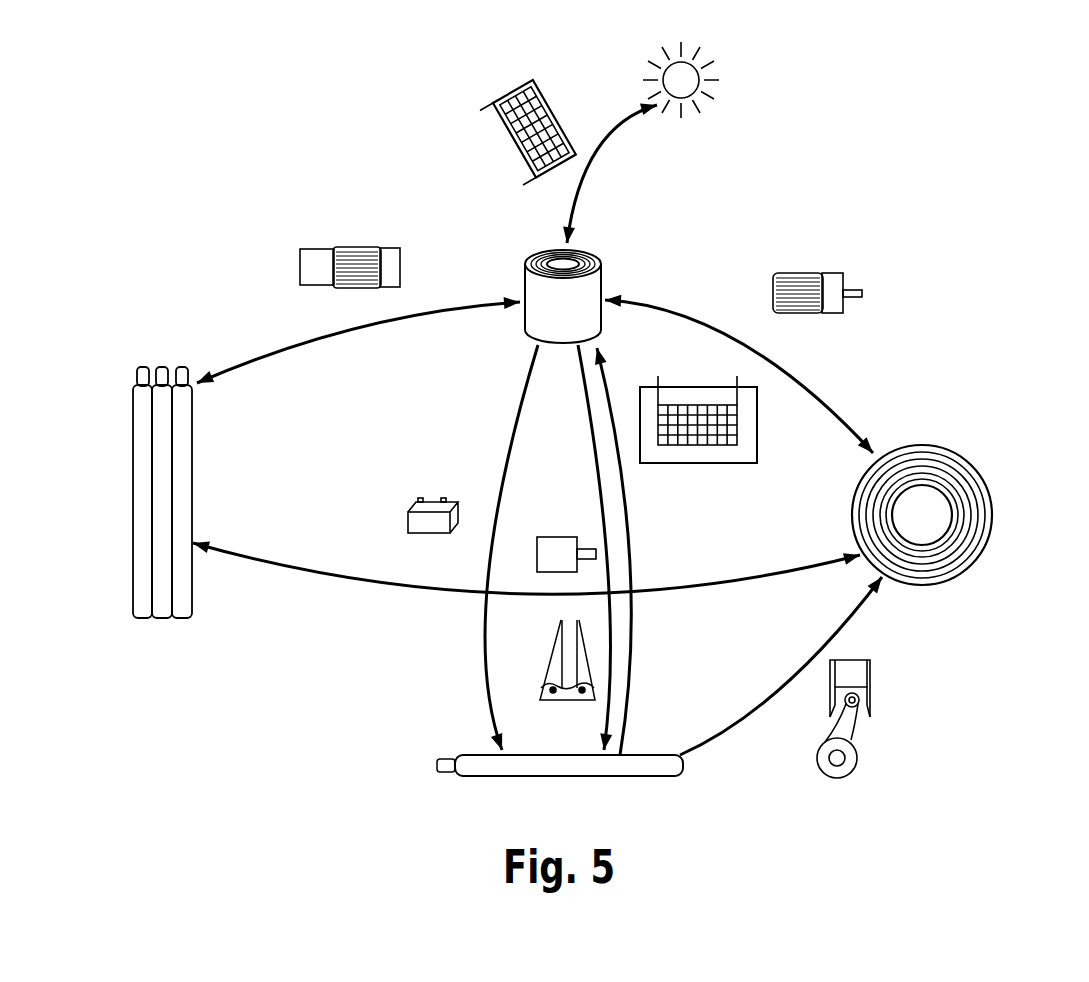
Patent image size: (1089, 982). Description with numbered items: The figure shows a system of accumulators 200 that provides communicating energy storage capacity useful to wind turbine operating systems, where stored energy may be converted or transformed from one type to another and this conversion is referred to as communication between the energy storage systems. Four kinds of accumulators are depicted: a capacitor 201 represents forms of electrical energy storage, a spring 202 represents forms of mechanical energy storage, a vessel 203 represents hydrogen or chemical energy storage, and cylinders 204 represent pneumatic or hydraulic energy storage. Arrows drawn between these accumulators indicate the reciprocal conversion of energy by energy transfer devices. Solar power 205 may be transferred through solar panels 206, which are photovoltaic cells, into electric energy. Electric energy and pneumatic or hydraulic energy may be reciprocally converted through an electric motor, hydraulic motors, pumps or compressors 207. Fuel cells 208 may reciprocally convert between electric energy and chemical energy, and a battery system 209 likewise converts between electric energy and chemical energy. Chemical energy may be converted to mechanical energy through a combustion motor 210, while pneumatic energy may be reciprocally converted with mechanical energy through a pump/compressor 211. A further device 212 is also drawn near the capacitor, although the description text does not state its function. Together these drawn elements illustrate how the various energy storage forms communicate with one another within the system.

The system of accumulators 200 is at (907, 100).
The capacitor 201 is at (600, 270).
The spring 202 is at (993, 522).
The vessel 203 is at (498, 777).
The cylinders 204 is at (135, 450).
The solar power 205 is at (698, 85).
The solar panels 206 is at (557, 110).
The electric motor/hydraulic motors, pumps or compressors 207 is at (362, 245).
The fuel cells 208 is at (708, 465).
The battery system 209 is at (407, 523).
The combustion motor 210 is at (852, 720).
The pump/compressor 211 is at (557, 535).
The electric motor 212 is at (817, 272).